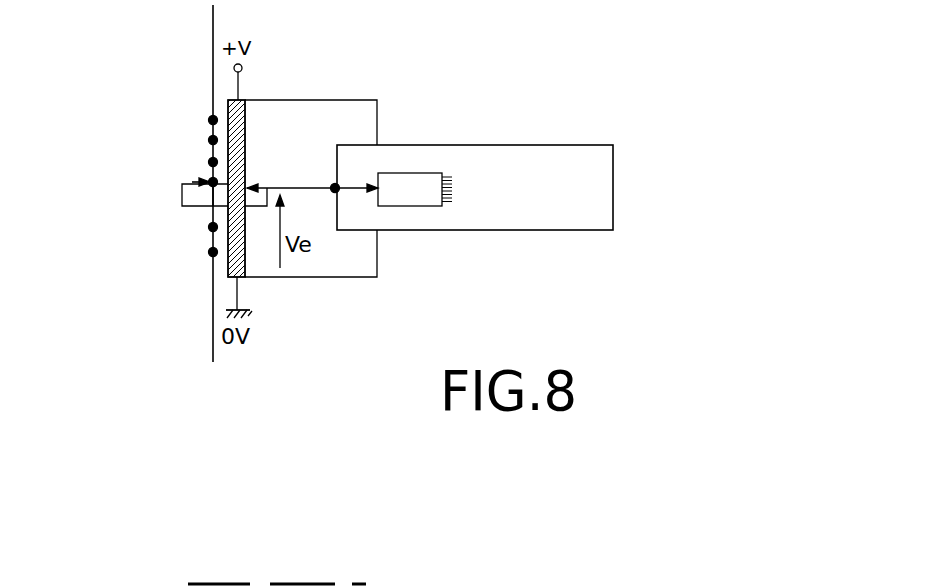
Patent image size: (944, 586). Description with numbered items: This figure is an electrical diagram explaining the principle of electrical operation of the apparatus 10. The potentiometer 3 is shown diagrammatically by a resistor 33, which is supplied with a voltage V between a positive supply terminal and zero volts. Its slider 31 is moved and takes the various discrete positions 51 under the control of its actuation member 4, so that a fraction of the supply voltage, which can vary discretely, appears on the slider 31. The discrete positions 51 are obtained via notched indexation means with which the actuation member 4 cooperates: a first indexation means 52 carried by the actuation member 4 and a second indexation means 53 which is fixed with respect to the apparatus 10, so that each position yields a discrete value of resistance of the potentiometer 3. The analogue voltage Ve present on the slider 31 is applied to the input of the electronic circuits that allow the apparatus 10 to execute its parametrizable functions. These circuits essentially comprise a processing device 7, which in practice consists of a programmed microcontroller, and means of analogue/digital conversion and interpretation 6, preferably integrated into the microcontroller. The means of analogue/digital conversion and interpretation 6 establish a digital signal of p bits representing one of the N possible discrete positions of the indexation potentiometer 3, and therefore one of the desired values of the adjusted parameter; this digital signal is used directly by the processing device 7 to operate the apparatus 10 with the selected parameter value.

The apparatus 10 is at (130, 252).
The discrete positions 51 is at (213, 162).
The first indexation means 52 is at (208, 182).
The actuation member 4 is at (168, 187).
The second indexation means 53 is at (210, 188).
The resistor 33 is at (245, 133).
The potentiometer 3 is at (259, 86).
The slider 31 is at (253, 185).
The processing device 7 is at (535, 218).
The means of analogue/digital conversion and interpretation 6 is at (412, 195).